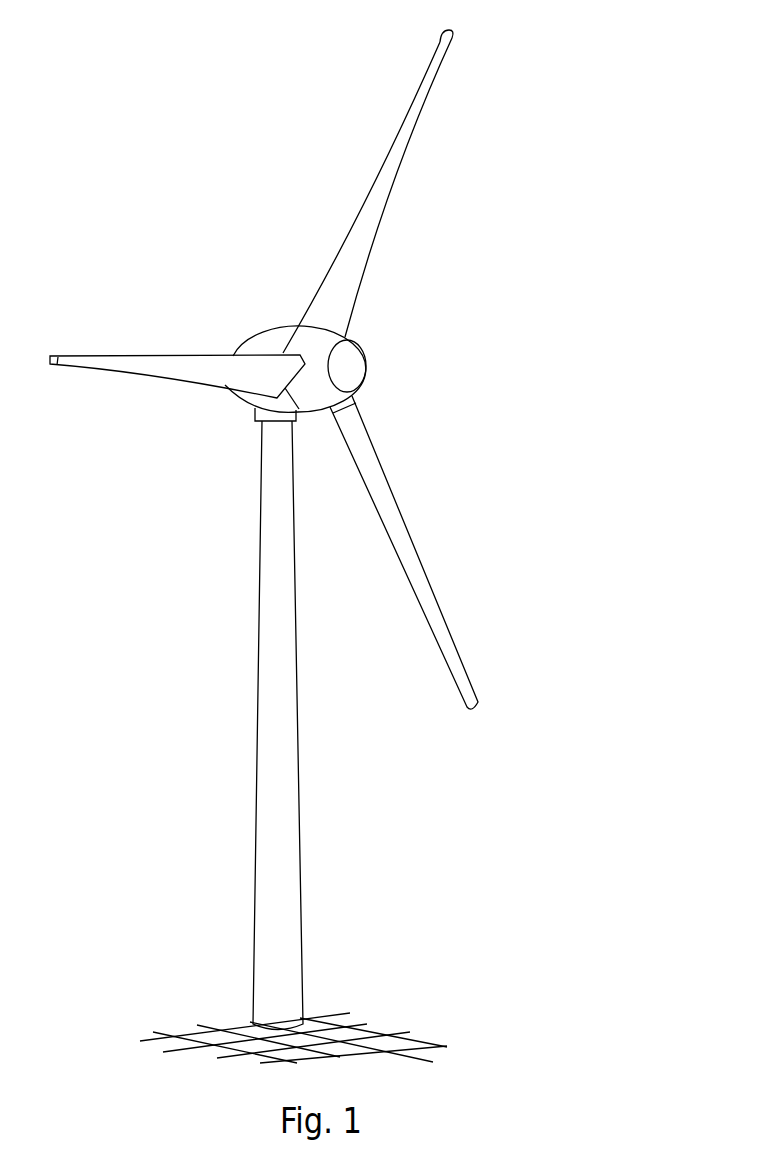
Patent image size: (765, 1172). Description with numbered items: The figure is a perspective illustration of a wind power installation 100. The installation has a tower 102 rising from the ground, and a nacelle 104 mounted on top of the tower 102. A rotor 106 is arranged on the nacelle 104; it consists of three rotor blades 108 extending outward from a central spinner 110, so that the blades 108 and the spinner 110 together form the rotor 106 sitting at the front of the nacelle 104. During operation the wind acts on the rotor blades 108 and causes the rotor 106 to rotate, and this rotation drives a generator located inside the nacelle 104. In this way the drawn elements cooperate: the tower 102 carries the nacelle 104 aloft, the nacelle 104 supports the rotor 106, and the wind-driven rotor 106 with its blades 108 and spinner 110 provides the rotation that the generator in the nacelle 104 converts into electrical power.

The wind power installation 100 is at (215, 488).
The tower 102 is at (282, 818).
The nacelle 104 is at (272, 343).
The rotor 106 is at (435, 290).
The rotor blades 108 is at (408, 142).
The spinner 110 is at (350, 367).